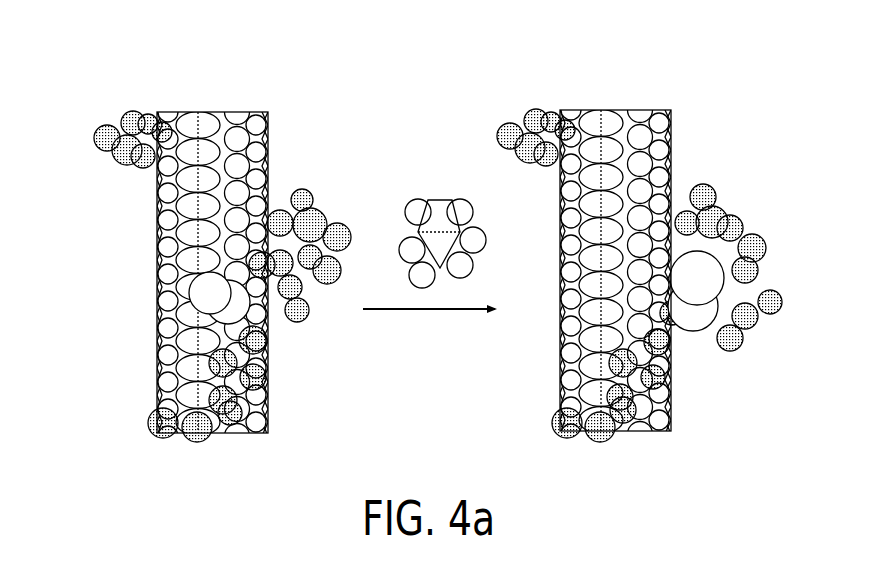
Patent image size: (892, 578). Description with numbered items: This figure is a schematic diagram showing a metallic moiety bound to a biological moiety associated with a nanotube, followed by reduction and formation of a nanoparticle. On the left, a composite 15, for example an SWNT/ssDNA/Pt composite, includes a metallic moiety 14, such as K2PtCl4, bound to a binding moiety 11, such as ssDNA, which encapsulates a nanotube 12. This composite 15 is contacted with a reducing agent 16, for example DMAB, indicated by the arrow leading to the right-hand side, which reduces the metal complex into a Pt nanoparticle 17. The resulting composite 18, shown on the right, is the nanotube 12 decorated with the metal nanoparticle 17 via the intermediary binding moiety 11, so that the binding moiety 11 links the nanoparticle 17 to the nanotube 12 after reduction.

The binding moiety 11 is at (307, 255).
The nanotube 12 is at (157, 313).
The metallic moiety 14 is at (245, 303).
The composite 15 is at (302, 135).
The reducing agent 16 is at (457, 208).
The metal nanoparticle 17 is at (690, 317).
The resulting composite 18 is at (706, 135).